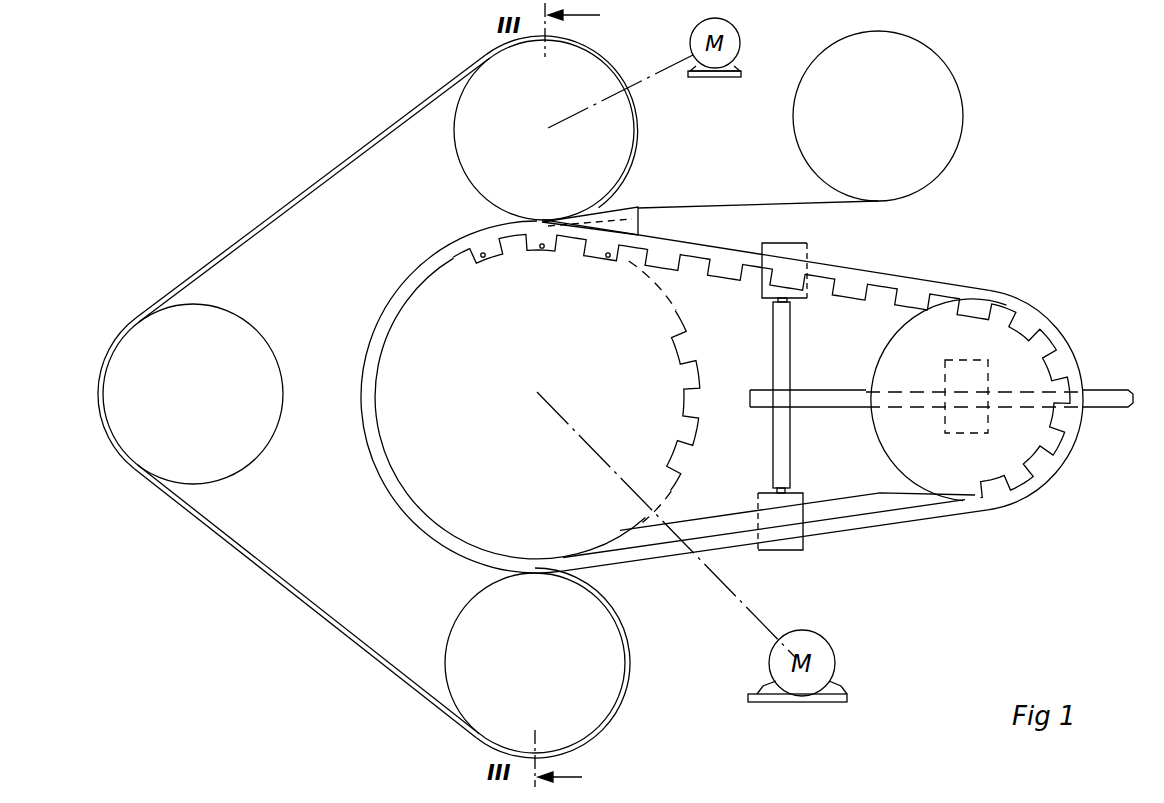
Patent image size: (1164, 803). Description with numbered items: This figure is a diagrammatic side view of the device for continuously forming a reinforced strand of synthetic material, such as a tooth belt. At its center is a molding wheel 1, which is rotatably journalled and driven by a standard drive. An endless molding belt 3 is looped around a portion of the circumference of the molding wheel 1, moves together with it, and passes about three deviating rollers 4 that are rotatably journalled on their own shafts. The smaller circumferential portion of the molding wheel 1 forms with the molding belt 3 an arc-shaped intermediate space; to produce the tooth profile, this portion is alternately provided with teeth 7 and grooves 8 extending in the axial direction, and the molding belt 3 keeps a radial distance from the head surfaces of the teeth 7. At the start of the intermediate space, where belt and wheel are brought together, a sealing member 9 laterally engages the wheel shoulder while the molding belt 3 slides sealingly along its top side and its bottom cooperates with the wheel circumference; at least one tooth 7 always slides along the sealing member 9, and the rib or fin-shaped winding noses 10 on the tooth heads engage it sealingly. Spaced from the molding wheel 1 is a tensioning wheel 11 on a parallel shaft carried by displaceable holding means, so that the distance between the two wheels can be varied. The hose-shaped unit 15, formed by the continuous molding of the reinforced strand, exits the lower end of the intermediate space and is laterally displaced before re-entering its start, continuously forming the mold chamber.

The molding wheel 1 is at (628, 468).
The molding belt 3 is at (344, 166).
The deviating rollers 4 is at (500, 148).
The teeth 7 is at (684, 421).
The grooves 8 is at (691, 385).
The sealing member 9 is at (632, 211).
The winding noses 10 is at (704, 421).
The tensioning wheel 11 is at (1010, 428).
The hose-shaped unit 15 is at (870, 505).